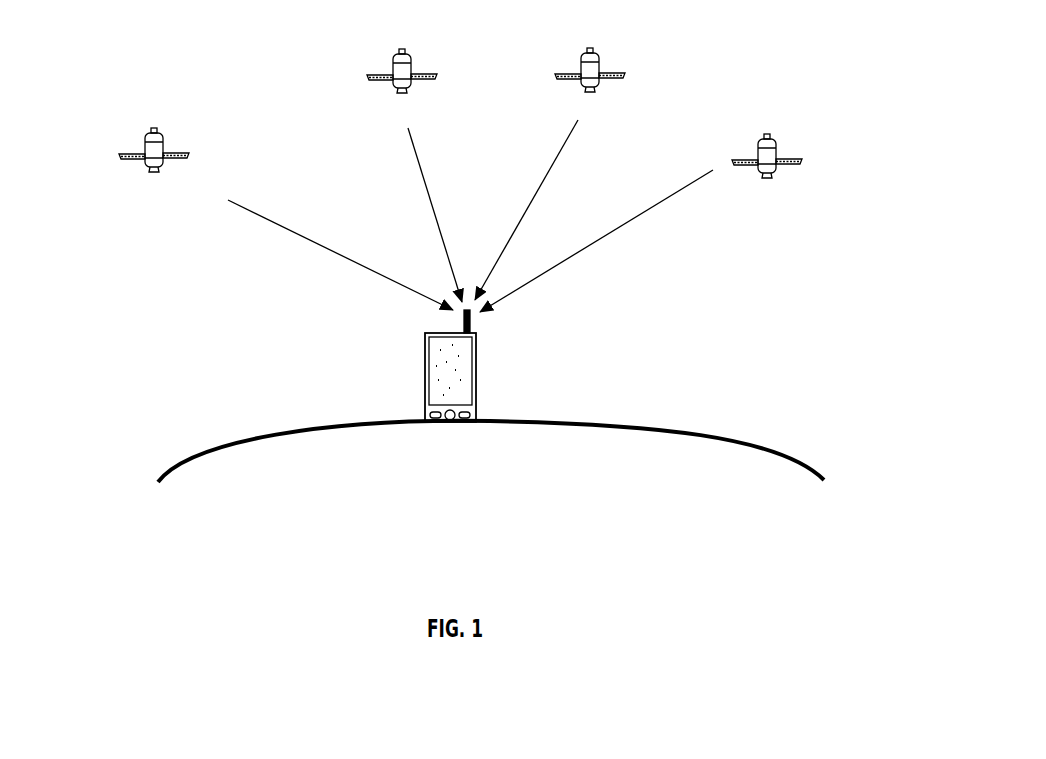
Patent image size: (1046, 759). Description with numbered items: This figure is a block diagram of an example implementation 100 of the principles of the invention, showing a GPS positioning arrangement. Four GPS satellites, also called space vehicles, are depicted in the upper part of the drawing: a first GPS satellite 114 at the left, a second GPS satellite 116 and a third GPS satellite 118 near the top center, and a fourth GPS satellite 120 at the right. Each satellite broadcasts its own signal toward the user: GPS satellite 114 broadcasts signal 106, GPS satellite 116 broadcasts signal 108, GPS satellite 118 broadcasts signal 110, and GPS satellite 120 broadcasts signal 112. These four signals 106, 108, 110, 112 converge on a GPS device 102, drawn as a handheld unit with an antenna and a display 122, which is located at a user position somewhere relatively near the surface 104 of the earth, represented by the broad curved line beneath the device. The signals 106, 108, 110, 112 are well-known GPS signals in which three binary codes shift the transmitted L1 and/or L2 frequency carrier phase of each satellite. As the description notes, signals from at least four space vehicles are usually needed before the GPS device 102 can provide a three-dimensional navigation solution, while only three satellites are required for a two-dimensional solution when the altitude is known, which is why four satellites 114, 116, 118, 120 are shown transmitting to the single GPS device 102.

The GPS positioning system 100 is at (699, 98).
The GPS device 102 is at (475, 390).
The surface of earth 104 is at (380, 432).
The signal 106 is at (325, 250).
The signal 108 is at (422, 182).
The signal 110 is at (540, 188).
The signal 112 is at (578, 252).
The GPS satellite 114 is at (153, 162).
The GPS satellite 116 is at (402, 83).
The GPS satellite 118 is at (590, 82).
The GPS satellite 120 is at (766, 168).
The display screen of mobile device 122 is at (450, 368).